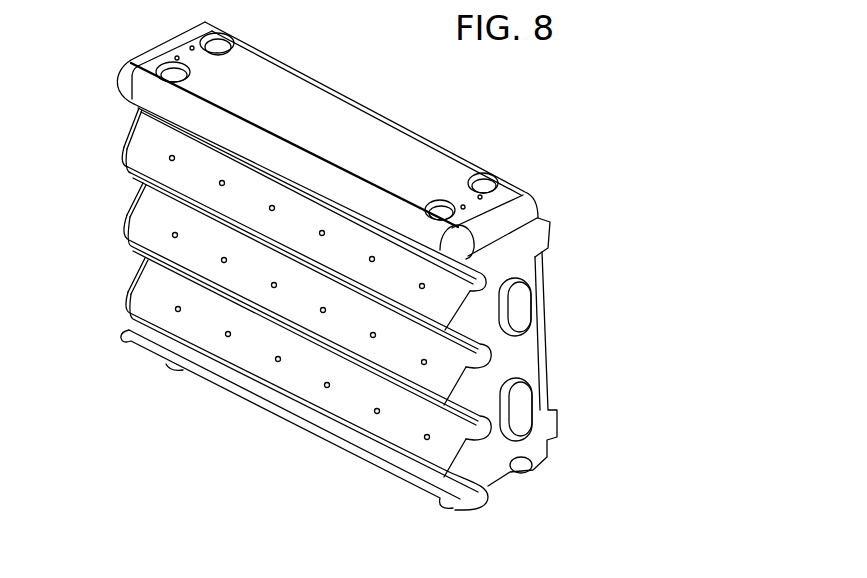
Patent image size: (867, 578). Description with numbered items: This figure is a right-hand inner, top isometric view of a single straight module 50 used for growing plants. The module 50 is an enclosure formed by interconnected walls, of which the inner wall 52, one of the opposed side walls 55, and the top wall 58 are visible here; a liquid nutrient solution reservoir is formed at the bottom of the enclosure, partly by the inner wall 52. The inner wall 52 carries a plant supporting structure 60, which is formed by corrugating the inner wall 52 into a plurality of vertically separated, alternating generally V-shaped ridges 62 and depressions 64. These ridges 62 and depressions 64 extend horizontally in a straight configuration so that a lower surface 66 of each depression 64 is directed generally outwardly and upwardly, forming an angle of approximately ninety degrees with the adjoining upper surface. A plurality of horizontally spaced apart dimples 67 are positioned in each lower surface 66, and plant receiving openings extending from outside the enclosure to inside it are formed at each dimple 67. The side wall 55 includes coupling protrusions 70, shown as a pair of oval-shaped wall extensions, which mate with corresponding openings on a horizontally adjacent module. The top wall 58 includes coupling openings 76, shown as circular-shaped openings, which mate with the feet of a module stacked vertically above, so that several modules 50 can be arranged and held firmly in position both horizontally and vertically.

The single straight module 50 is at (60, 43).
The inner wall 52 is at (400, 437).
The side wall 55 is at (517, 360).
The top wall 58 is at (345, 122).
The plant supporting structure 60 is at (137, 138).
The ridges 62 is at (137, 243).
The depressions 64 is at (137, 185).
The lower surface 66 is at (140, 215).
The dimples 67 is at (278, 286).
The coupling protrusions 70 is at (523, 313).
The coupling openings 76 is at (220, 54).